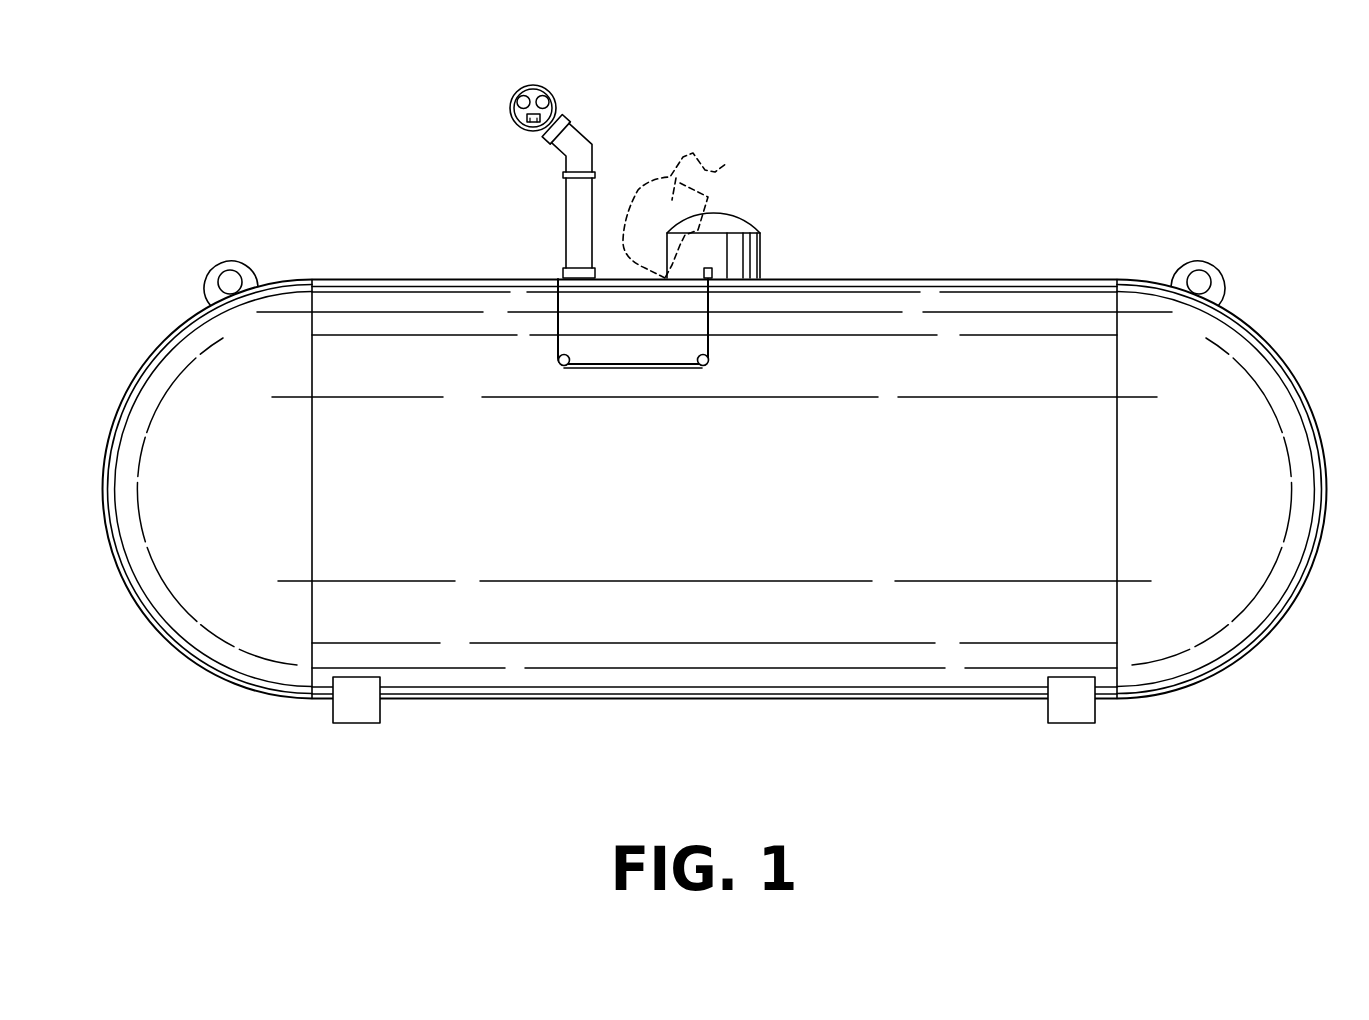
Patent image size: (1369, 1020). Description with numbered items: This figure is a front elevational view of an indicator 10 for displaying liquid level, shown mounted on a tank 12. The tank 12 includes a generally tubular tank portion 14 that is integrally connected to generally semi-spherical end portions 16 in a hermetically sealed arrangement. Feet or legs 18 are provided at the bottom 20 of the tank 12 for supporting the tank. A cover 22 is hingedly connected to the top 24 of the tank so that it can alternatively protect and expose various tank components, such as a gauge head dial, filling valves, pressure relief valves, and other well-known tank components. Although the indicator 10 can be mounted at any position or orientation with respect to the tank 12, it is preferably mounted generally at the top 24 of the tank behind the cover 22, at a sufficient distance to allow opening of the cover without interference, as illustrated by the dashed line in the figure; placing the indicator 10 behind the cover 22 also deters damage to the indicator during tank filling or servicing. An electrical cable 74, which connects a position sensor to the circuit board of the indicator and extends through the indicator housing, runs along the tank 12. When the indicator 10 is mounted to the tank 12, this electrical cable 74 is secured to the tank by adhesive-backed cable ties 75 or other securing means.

The indicator 10 is at (600, 126).
The tank 12 is at (1094, 272).
The tubular tank portion 14 is at (985, 303).
The semi-spherical end portions 16 is at (185, 362).
The feet or legs 18 is at (357, 708).
The bottom 20 is at (707, 700).
The cover 22 is at (722, 225).
The top 24 is at (862, 278).
The electrical cable 74 is at (656, 369).
The adhesive-backed cable ties 75 is at (553, 370).